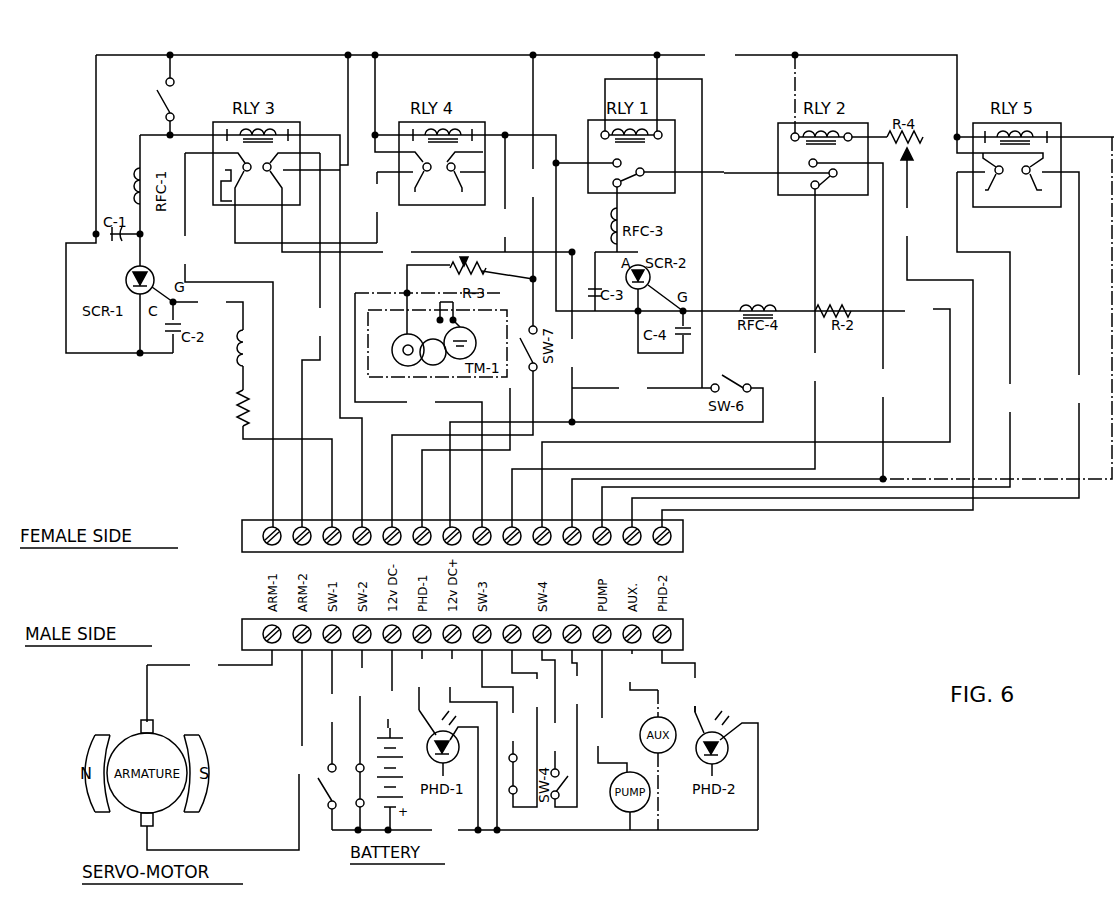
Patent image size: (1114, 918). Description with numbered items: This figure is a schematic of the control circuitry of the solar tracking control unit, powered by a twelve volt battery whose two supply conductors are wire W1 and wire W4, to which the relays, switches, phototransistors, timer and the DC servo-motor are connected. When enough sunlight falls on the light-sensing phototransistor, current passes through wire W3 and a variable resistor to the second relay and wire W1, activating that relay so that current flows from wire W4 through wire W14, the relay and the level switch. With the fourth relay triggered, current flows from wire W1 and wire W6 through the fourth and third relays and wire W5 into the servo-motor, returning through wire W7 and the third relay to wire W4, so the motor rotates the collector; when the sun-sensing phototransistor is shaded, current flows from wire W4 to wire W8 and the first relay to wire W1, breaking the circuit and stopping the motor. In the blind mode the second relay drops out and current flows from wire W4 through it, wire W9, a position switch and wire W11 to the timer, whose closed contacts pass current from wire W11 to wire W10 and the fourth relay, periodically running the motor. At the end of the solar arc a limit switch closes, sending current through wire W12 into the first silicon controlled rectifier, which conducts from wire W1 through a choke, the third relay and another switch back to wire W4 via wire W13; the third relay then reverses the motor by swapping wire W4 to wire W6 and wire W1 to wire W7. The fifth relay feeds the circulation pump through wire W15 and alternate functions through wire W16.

The wire W1 is at (554, 384).
The wire W3 is at (817, 460).
The wire W4 is at (567, 500).
The wire W5 is at (377, 207).
The wire W6 is at (210, 416).
The wire W7 is at (309, 463).
The wire W8 is at (558, 543).
The wire W9 is at (670, 530).
The wire W10 is at (505, 193).
The wire W11 is at (441, 517).
The wire W12 is at (259, 505).
The wire W13 is at (349, 487).
The wire W14 is at (745, 523).
The wire W15 is at (803, 565).
The wire W16 is at (854, 528).